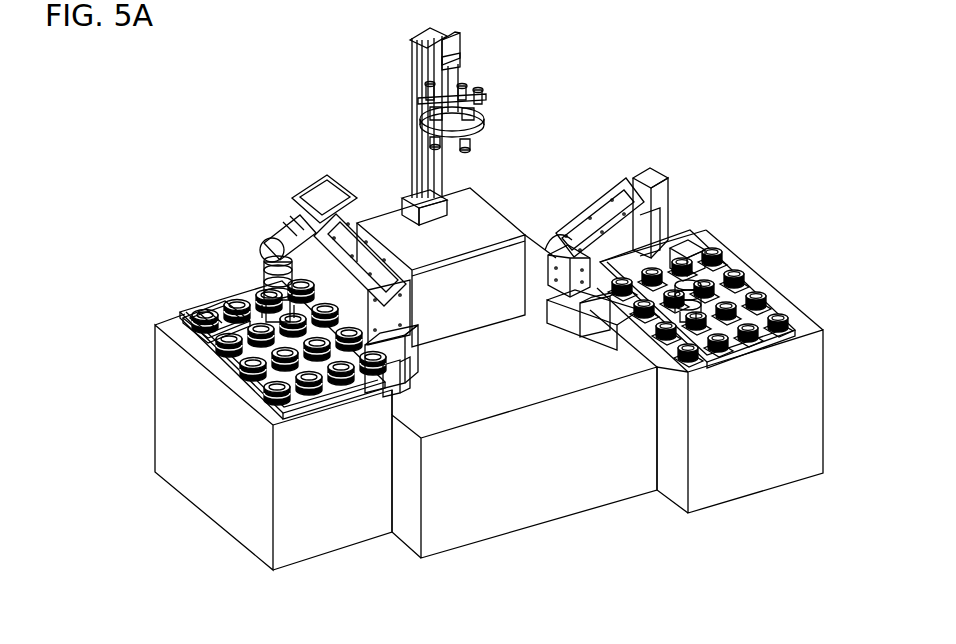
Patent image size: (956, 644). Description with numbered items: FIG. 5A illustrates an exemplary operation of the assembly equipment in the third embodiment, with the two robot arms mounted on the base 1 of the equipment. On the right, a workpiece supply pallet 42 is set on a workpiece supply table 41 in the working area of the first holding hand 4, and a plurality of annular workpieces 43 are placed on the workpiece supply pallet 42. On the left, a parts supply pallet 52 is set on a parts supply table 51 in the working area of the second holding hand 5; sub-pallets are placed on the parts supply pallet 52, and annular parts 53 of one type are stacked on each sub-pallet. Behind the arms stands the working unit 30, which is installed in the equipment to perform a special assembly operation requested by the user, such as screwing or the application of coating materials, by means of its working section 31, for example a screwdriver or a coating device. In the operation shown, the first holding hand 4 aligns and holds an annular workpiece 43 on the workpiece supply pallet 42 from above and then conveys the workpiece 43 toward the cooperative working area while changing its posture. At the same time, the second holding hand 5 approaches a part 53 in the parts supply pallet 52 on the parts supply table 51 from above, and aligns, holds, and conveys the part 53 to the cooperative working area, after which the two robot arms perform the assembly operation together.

The base / main body 1 is at (540, 505).
The first holding hand 4 is at (692, 238).
The second holding hand 5 is at (257, 271).
The working unit 30 is at (402, 111).
The working section 31 is at (488, 100).
The workpiece supply table 41 is at (753, 472).
The workpiece supply pallet 42 is at (790, 330).
The annular workpiece 43 is at (733, 270).
The parts supply table 51 is at (200, 475).
The parts supply pallet 52 is at (302, 407).
The annular part 53 is at (232, 297).